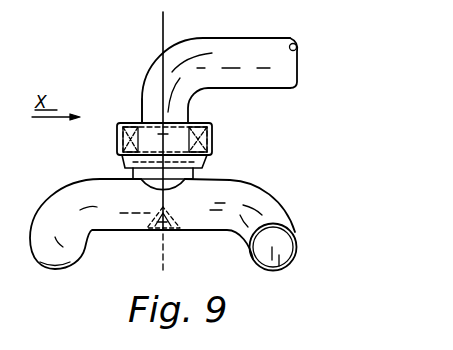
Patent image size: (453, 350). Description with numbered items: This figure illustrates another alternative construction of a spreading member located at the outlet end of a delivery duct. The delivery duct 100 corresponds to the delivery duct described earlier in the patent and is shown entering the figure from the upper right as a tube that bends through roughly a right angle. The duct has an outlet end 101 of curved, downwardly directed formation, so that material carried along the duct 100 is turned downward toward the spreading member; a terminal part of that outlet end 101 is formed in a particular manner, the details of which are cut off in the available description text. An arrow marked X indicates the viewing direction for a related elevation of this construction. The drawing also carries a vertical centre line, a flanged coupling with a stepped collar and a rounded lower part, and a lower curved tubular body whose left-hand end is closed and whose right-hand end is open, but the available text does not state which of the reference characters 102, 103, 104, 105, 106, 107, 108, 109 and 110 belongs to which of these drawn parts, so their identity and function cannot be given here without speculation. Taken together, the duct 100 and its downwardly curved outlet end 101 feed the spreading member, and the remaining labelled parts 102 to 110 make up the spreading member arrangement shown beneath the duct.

The delivery duct 100 is at (277, 25).
The outlet end 101 is at (143, 98).
The lower pipe section 102 is at (213, 234).
The flange coupling 103 is at (212, 142).
The lower pipe bend 104 is at (85, 195).
The lower pipe portion 105 is at (230, 198).
The ball joint centre 106 is at (153, 235).
The closed pipe end 107 is at (52, 263).
The open pipe end 108 is at (275, 270).
The collar 109 is at (137, 179).
The axis 110 is at (163, 30).